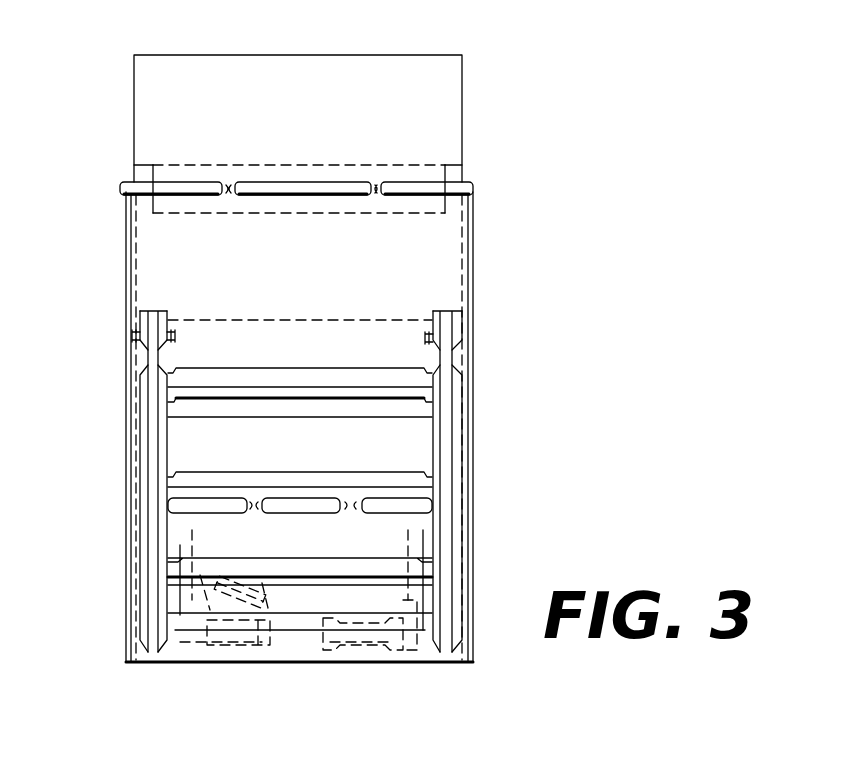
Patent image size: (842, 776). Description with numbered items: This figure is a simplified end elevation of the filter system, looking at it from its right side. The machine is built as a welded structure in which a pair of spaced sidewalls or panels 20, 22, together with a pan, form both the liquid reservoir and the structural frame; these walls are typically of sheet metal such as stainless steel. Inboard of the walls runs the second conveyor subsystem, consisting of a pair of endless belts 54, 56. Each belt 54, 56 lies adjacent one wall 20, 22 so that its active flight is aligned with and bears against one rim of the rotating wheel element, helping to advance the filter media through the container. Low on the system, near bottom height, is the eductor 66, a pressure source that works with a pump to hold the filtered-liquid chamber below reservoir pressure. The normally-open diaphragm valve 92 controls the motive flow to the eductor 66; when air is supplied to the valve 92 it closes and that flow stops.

The sidewall 20 is at (126, 272).
The sidewall 22 is at (472, 284).
The belt 54 is at (145, 422).
The belt 56 is at (468, 425).
The eductor 66 is at (325, 645).
The diaphragm valve 92 is at (228, 645).